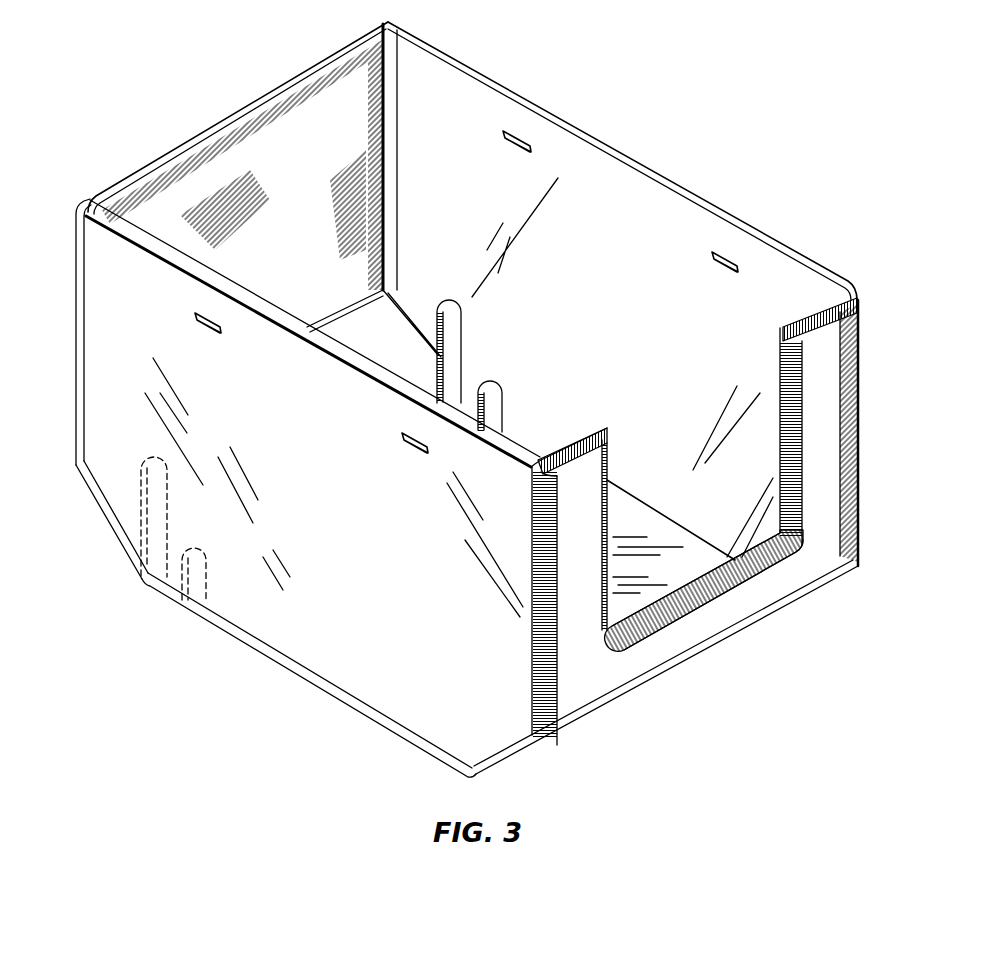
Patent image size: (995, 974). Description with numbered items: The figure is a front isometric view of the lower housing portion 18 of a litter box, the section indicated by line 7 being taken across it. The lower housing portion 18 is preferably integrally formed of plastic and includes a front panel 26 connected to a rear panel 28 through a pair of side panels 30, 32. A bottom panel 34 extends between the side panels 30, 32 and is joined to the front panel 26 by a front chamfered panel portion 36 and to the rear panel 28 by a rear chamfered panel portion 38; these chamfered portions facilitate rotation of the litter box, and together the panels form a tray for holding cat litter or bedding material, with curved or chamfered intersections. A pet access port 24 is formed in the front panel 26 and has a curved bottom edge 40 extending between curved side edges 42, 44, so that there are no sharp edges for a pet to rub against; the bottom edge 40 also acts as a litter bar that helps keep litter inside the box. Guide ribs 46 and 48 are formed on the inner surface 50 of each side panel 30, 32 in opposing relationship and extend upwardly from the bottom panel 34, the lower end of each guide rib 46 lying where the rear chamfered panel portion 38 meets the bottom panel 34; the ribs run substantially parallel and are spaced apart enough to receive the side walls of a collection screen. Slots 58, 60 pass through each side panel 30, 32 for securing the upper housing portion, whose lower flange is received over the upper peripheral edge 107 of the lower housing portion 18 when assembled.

The section line 7- 7 is at (705, 373).
The lower housing portion 18 is at (627, 147).
The pet access port 24 is at (778, 446).
The front panel 26 is at (590, 685).
The rear panel 28 is at (278, 101).
The side panel 30 is at (237, 605).
The side panel 32 is at (673, 207).
The bottom panel 34 is at (650, 597).
The front chamfered panel portion 36 is at (515, 752).
The rear chamfered panel portion 38 is at (105, 527).
The curved bottom edge 40 is at (743, 577).
The curved side edge 42 is at (797, 413).
The curved side edge 44 is at (617, 505).
The guide rib 46 is at (462, 316).
The guide rib 48 is at (502, 388).
The inner surface 50 is at (567, 257).
The slot 58 is at (710, 258).
The slot 60 is at (503, 134).
The upper peripheral edge 107 is at (782, 237).